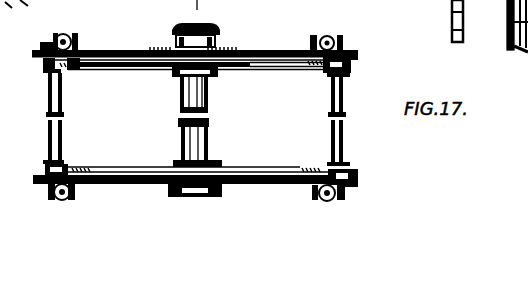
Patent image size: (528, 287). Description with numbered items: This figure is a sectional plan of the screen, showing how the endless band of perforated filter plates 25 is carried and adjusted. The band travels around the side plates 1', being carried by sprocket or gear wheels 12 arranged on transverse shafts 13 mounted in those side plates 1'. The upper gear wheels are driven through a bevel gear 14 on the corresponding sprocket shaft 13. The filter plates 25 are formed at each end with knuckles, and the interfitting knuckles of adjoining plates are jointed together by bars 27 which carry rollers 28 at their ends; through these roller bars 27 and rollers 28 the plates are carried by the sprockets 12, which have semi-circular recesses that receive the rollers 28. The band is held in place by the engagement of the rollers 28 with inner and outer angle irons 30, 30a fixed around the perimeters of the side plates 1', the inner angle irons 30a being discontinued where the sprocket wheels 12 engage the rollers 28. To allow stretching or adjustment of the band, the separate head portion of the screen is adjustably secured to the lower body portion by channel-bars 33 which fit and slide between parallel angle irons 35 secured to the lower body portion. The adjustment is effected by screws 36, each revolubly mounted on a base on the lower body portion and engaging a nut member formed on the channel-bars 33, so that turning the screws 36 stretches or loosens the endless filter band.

The side plate 1' is at (195, 49).
The sprocket wheel 12 is at (247, 165).
The transverse shaft 13 is at (182, 101).
The bevel gear 14 is at (210, 30).
The perforated filter plate 25 is at (344, 132).
The roller bar 27 is at (335, 89).
The roller 28 is at (33, 61).
The outer angle iron 30 is at (351, 55).
The inner angle iron 30a is at (72, 65).
The channel-bar 33 is at (83, 168).
The parallel angle iron 35 is at (37, 44).
The adjusting screw 36 is at (332, 36).